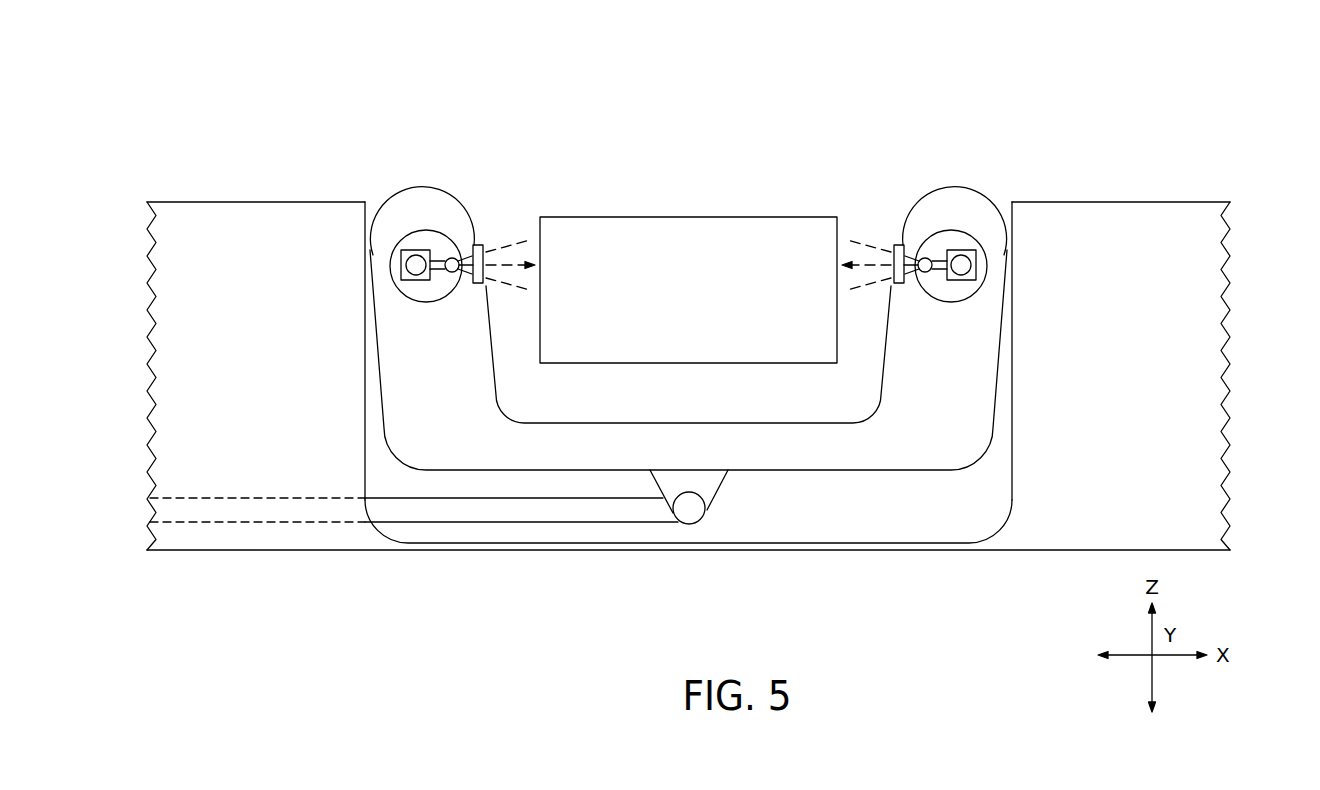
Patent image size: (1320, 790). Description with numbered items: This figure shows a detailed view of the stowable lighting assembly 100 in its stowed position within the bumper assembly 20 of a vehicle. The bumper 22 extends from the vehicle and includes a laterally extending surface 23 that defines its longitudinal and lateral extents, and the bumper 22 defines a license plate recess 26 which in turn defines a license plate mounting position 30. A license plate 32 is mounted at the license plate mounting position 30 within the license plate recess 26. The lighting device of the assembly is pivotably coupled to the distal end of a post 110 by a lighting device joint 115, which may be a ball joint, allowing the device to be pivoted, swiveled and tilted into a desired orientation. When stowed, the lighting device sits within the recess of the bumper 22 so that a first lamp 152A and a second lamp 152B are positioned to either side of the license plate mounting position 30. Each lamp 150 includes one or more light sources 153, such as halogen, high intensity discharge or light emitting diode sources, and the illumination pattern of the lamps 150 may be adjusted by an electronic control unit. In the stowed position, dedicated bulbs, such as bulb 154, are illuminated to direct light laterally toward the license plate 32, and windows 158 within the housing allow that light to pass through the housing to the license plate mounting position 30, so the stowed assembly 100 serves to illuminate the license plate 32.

The bumper assembly 20 is at (1217, 122).
The bumper 22 is at (200, 202).
The laterally extending surface 23 is at (1101, 397).
The license plate recess 26 is at (985, 549).
The license plate mounting position 30 is at (855, 183).
The license plate 32 is at (680, 217).
The stowable lighting assembly 100 is at (1010, 158).
The post 110 is at (549, 550).
The lighting device joint 115 is at (705, 512).
The lamp 150 is at (405, 234).
The first lamp 152A is at (387, 266).
The second lamp 152B is at (952, 210).
The light source 153 is at (423, 298).
The bulb 154 is at (455, 256).
The window 158 is at (478, 245).